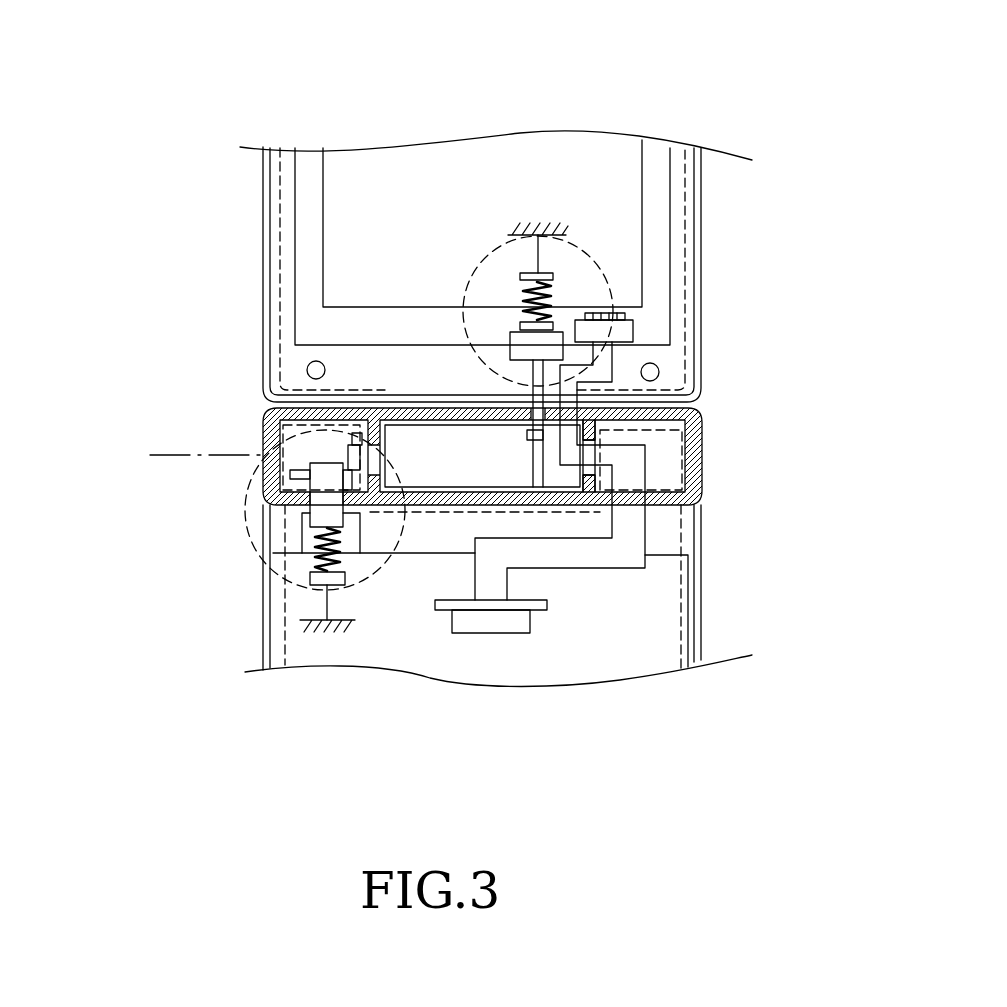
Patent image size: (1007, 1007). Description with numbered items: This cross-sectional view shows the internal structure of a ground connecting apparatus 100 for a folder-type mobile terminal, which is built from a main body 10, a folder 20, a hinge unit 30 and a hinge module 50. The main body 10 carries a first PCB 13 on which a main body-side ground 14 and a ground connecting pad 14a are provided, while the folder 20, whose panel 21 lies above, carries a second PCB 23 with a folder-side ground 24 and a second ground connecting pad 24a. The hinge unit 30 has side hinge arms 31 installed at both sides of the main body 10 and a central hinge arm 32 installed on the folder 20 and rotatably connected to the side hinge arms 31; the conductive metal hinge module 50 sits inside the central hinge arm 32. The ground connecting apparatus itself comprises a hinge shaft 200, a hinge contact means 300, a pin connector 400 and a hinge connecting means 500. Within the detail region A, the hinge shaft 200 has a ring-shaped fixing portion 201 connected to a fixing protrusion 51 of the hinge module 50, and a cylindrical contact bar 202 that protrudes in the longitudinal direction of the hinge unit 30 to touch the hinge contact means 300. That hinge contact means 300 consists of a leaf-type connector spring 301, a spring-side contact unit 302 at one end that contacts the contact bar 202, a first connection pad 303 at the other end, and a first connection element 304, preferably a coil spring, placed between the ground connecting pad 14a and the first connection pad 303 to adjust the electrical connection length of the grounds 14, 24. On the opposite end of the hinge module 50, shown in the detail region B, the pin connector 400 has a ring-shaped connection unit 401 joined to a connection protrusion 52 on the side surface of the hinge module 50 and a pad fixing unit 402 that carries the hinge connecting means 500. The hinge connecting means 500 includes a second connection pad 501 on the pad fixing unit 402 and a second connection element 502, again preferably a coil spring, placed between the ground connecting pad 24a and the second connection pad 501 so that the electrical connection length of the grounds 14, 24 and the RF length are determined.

The image forming apparatus 100 is at (838, 176).
The main body 10 is at (716, 608).
The first PCB 13 is at (583, 668).
The main body-side ground 14 is at (682, 540).
The ground connecting pad 14a is at (297, 618).
The folder 20 is at (361, 150).
The cover panel 21 is at (335, 268).
The second PCB 23 is at (302, 316).
The folder-side ground 24 is at (686, 198).
The ground connecting pad 24a is at (544, 250).
The hinge unit 30 is at (716, 480).
The side hinge arms 31 is at (700, 493).
The central hinge arm 32 is at (533, 500).
The hinge module 50 is at (445, 453).
The fixing protrusion 51 is at (367, 515).
The connection protrusion 52 is at (578, 457).
The hinge shaft 200 is at (70, 428).
The fixing portion 201 is at (340, 443).
The contact bar 202 is at (295, 475).
The hinge contact means 300 is at (108, 607).
The leaf-type connector spring 301 is at (305, 525).
The spring-side contact unit 302 is at (305, 493).
The first connection pad 303 is at (318, 535).
The first connection element 304 is at (335, 574).
The pin connector 400 is at (822, 385).
The connection unit 401 is at (540, 483).
The pad fixing unit 402 is at (563, 356).
The hinge connecting means 500 is at (822, 270).
The second connection pad 501 is at (630, 332).
The second connection element 502 is at (560, 298).
The detail region A is at (388, 588).
The detail region B is at (596, 254).